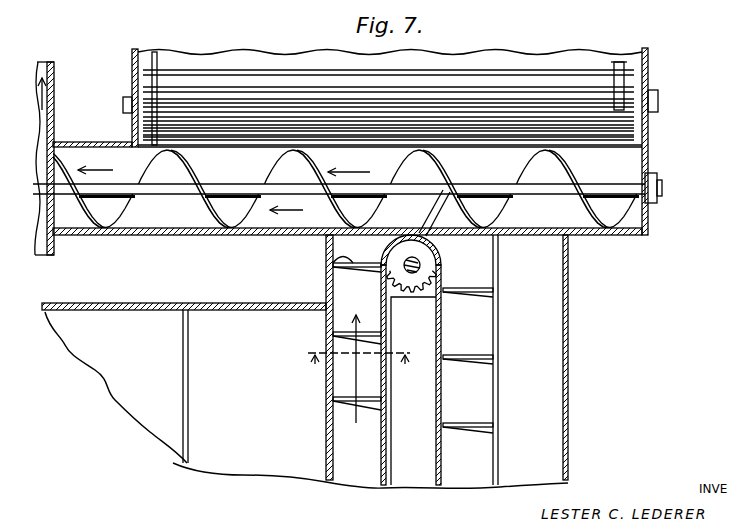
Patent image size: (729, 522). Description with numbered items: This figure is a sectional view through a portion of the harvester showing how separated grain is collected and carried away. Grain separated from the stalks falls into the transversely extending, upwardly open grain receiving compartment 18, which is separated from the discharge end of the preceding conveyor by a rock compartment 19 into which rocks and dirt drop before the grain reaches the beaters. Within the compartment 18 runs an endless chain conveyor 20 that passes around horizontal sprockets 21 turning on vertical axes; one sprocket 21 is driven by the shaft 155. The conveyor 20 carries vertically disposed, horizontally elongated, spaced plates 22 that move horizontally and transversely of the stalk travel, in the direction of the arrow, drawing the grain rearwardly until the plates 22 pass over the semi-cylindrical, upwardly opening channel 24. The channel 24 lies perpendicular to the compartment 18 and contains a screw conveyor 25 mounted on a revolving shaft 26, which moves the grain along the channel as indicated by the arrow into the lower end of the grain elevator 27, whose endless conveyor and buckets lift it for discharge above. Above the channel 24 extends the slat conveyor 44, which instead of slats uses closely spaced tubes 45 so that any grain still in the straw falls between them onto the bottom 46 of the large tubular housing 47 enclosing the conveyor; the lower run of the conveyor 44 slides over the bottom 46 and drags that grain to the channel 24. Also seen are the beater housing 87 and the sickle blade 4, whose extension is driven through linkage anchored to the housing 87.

The sickle blade 4 is at (359, 348).
The grain receiving compartment 18 is at (350, 368).
The rock compartment 19 is at (326, 420).
The endless chain conveyor 20 is at (440, 327).
The sprocket 21 is at (427, 257).
The plates 22 is at (331, 256).
The channel 24 is at (619, 165).
The screw conveyor 25 is at (230, 213).
The revolving shaft 26 is at (168, 193).
The grain elevator 27 is at (55, 119).
The slat conveyor 44 is at (555, 69).
The tubes 45 is at (519, 87).
The bottom 46 is at (585, 57).
The tubular housing 47 is at (649, 51).
The beater housing 87 is at (146, 305).
The shaft 155 is at (422, 270).